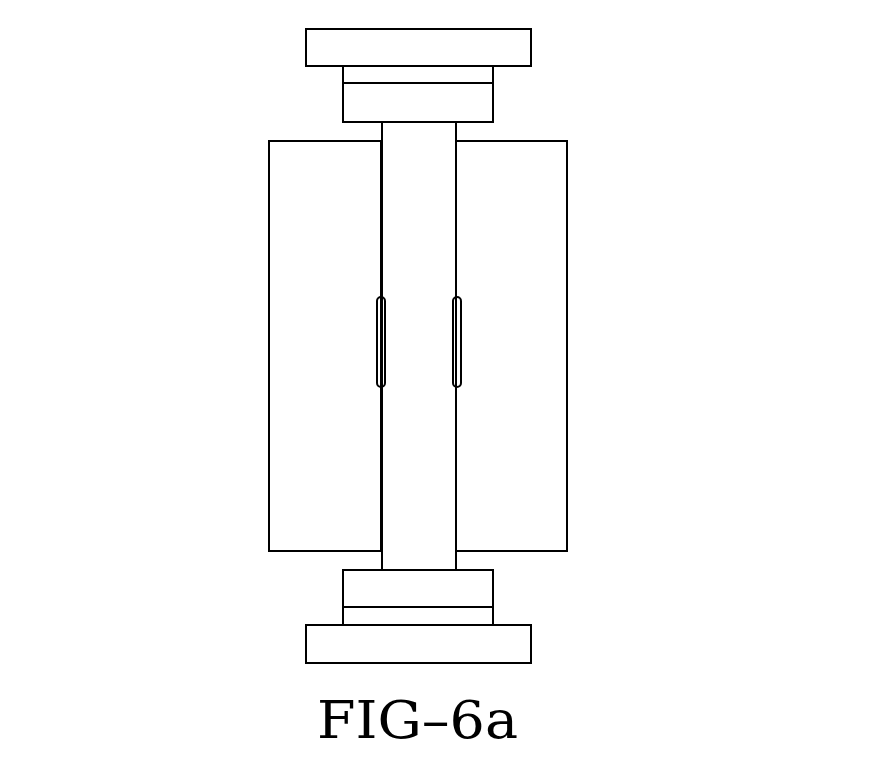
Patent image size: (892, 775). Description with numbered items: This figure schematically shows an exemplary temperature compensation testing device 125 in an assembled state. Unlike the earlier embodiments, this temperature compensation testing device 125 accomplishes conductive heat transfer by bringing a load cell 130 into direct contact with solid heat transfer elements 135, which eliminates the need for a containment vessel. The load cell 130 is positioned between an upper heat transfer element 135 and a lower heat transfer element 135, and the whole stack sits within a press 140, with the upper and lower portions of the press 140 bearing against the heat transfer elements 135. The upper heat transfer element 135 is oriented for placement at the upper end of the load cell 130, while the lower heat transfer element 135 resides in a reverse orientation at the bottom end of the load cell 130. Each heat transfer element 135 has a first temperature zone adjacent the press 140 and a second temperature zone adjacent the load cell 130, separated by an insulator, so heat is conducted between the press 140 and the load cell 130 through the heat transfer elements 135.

The temperature compensation testing device 125 is at (659, 144).
The load cell 130 is at (234, 309).
The heat transfer element 135 is at (329, 94).
The press 140 is at (317, 43).